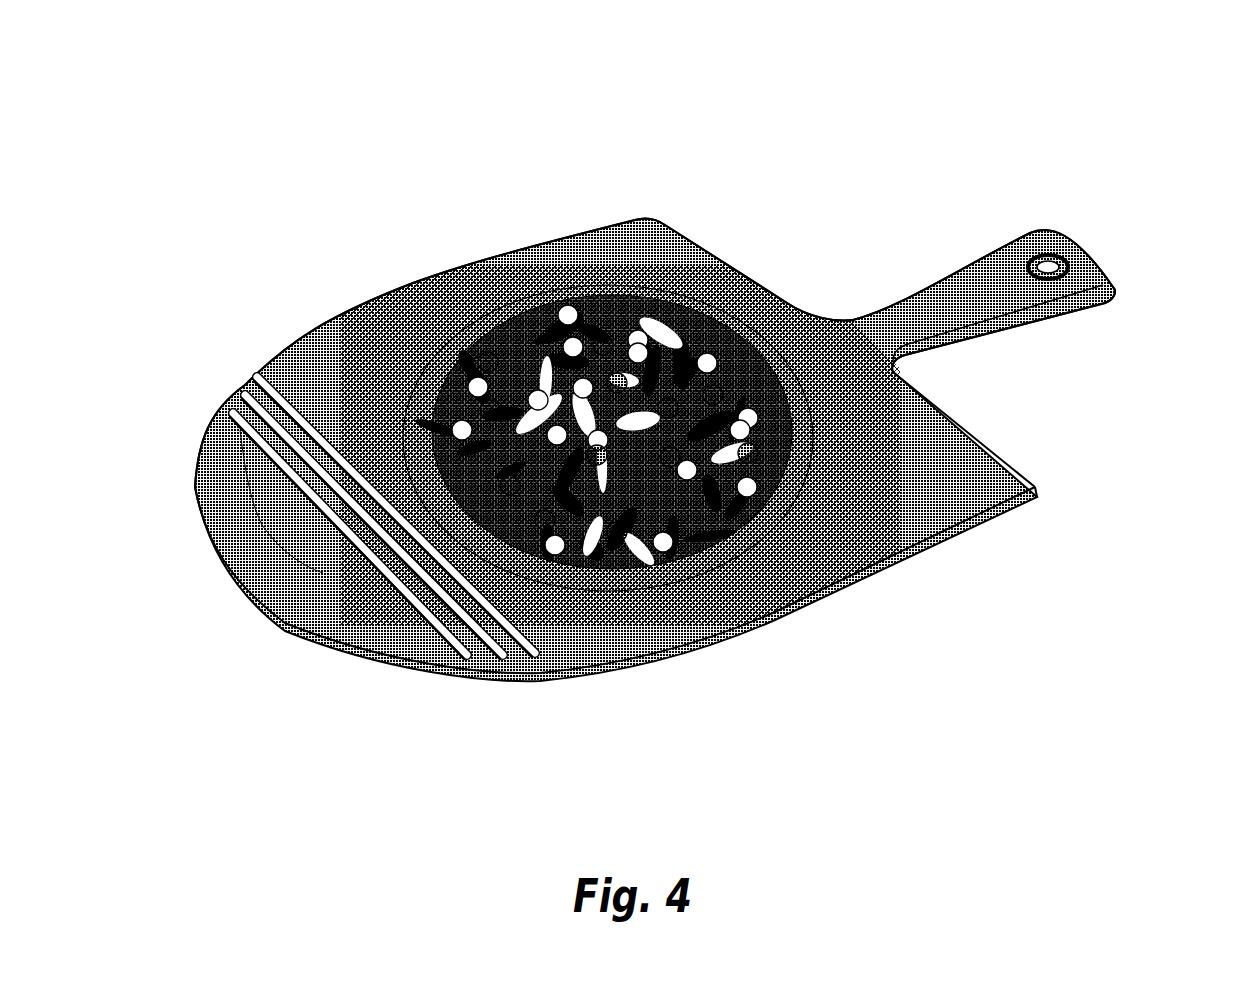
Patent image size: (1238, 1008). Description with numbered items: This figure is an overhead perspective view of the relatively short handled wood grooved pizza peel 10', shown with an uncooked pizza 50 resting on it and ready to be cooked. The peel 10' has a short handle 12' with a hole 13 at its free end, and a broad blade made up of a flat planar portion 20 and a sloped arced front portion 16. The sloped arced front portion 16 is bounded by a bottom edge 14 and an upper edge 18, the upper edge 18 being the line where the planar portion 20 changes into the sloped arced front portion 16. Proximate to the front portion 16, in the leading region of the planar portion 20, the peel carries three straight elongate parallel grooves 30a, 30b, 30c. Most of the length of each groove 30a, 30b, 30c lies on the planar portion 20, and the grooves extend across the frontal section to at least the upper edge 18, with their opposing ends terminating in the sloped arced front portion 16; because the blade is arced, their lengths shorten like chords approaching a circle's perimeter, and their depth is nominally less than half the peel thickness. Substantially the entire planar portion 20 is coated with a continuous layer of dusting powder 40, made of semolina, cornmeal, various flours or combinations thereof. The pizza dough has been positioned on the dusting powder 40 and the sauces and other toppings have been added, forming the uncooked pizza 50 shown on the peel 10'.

The grooved pizza peel 10' is at (614, 340).
The short handle 12' is at (1034, 358).
The hanging hole 13 is at (1050, 260).
The bottom edge 14 is at (208, 542).
The sloped arced front portion 16 is at (217, 433).
The upper edge 18 is at (565, 648).
The planar portion 20 is at (598, 270).
The elongate parallel groove 30a is at (290, 405).
The elongate parallel groove 30b is at (342, 508).
The elongate parallel groove 30c is at (338, 538).
The dusting powder 40 is at (833, 525).
The uncooked pizza 50 is at (720, 553).